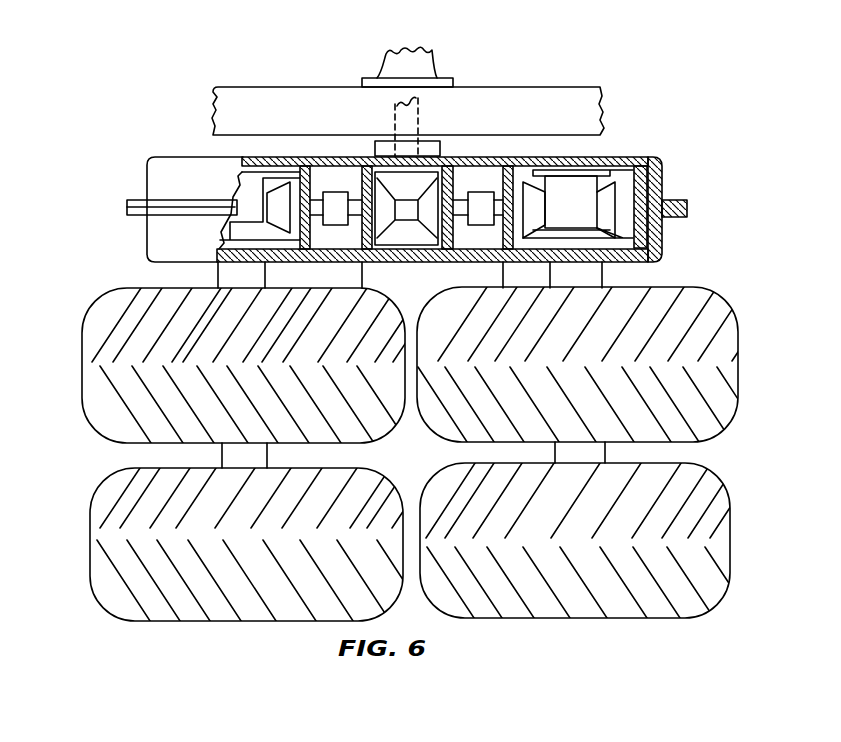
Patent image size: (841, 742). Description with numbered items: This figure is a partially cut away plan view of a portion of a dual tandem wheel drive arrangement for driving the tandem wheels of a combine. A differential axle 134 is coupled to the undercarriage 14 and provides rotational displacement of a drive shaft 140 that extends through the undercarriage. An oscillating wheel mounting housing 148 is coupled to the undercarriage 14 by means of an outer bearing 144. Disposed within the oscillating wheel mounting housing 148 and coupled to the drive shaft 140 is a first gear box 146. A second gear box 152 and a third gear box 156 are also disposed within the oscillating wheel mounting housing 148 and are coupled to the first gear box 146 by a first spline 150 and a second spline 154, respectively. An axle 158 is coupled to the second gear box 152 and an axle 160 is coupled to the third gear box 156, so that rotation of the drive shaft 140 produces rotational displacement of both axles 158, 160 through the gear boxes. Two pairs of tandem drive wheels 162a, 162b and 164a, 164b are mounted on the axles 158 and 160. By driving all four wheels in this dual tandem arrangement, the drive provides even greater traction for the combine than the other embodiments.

The undercarriage 14 is at (543, 92).
The differential axle 134 is at (413, 60).
The drive shaft 140 is at (393, 117).
The outer bearing 144 is at (440, 152).
The first gear box 146 is at (452, 222).
The oscillating wheel mounting housing 148 is at (150, 175).
The first spline 150 is at (363, 263).
The second gear box 152 is at (340, 222).
The second spline 154 is at (493, 220).
The third gear box 156 is at (643, 185).
The axle 158 is at (218, 277).
The axle 160 is at (602, 272).
The tandem drive wheel 162a is at (100, 297).
The tandem drive wheel 162b is at (702, 293).
The tandem drive wheel 164a is at (117, 573).
The tandem drive wheel 164b is at (703, 590).